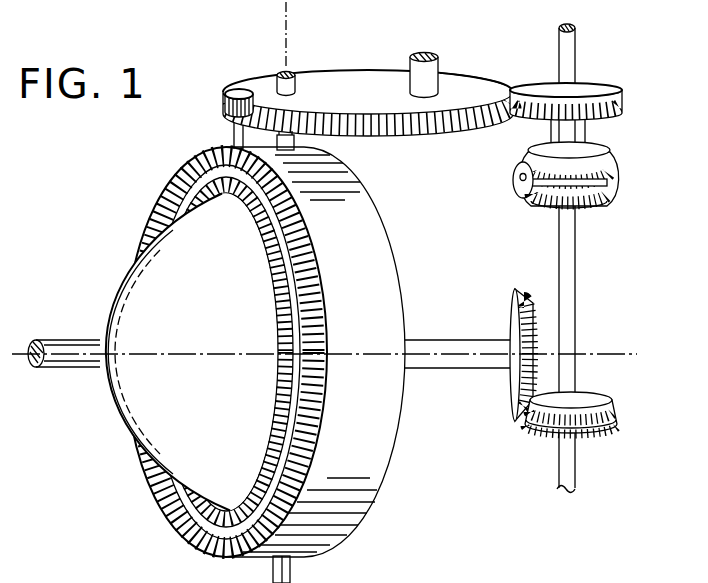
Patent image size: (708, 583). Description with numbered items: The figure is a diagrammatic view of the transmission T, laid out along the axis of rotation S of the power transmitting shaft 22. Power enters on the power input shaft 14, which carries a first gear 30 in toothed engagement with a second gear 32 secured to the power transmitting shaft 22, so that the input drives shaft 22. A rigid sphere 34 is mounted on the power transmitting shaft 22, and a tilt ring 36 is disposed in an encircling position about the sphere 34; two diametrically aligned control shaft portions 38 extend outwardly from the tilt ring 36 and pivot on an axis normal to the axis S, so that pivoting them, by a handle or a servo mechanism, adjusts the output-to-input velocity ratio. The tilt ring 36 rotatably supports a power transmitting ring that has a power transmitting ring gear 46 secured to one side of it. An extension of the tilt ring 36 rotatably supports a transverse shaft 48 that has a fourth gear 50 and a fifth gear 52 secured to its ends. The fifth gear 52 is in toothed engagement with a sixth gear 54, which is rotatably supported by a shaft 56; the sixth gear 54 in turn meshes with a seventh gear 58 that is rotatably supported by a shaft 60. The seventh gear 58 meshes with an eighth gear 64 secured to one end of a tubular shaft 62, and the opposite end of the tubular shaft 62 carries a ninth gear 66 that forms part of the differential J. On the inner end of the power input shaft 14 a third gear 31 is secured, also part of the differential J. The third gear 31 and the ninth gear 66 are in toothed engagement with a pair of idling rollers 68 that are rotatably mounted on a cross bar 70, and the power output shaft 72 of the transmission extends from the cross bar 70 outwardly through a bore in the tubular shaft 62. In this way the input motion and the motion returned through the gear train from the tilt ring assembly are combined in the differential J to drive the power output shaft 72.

The power input shaft 14 is at (574, 461).
The power transmitting shaft 22 is at (431, 369).
The first gear 30 is at (614, 405).
The third gear 31 is at (593, 210).
The second gear 32 is at (511, 404).
The rigid sphere 34 is at (231, 423).
The tilt ring 36 is at (386, 468).
The control shaft portions 38 is at (300, 143).
The power transmitting ring gear 46 is at (303, 458).
The transverse shaft 48 is at (233, 132).
The fourth gear 50 is at (216, 197).
The fifth gear 52 is at (228, 100).
The sixth gear 54 is at (318, 87).
The shaft 56 is at (294, 70).
The seventh gear 58 is at (472, 82).
The shaft 60 is at (433, 54).
The tubular shaft 62 is at (582, 133).
The eighth gear 64 is at (611, 91).
The ninth gear 66 is at (541, 143).
The idling rollers 68 is at (619, 182).
The cross bar 70 is at (544, 204).
The power output shaft 72 is at (574, 54).
The differential J is at (568, 184).
The axis of rotation S is at (614, 355).
The transmission T is at (242, 352).